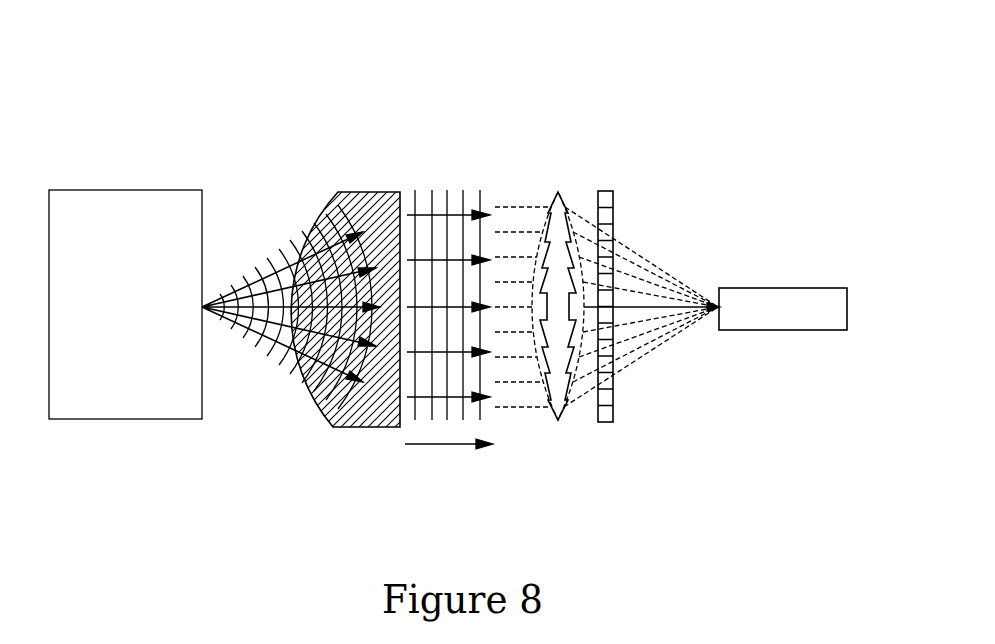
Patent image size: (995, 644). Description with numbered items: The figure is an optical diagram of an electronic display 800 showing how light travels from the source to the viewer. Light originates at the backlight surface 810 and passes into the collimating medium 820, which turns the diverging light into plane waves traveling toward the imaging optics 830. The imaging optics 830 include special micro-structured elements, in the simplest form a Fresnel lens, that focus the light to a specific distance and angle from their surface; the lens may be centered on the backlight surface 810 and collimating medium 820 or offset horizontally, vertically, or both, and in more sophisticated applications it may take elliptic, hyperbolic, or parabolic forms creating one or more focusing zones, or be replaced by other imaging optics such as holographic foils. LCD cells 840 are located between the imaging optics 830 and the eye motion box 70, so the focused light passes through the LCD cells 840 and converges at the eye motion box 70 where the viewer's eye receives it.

The electronic display 800 is at (130, 43).
The backlight surface 810 is at (130, 190).
The collimating medium 820 is at (344, 191).
The imaging optics 830 is at (562, 202).
The LCD cells 840 is at (614, 198).
The eye motion box 70 is at (781, 288).